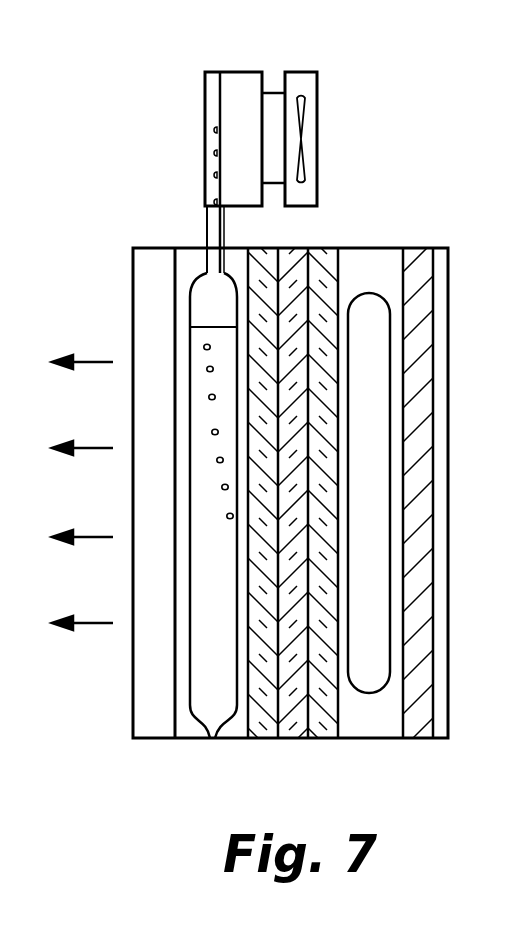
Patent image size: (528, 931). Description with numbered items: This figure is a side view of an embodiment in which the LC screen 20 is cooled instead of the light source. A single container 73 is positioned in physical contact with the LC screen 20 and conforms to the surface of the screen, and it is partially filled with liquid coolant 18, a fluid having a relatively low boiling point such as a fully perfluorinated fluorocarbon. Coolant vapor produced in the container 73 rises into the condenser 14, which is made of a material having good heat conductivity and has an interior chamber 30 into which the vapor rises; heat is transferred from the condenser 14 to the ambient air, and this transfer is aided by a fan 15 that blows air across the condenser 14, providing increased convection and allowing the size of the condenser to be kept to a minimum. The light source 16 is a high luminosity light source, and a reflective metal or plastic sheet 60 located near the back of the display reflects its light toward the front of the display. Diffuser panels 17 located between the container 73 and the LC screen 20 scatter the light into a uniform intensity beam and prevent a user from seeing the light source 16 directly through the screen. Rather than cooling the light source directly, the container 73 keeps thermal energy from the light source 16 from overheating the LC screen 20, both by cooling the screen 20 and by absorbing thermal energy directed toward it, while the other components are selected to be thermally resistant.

The condenser 14 is at (219, 72).
The fan 15 is at (312, 83).
The light source 16 is at (355, 426).
The diffuser panels 17 is at (290, 738).
The liquid coolant 18 is at (200, 697).
The LC screen 20 is at (157, 255).
The interior chamber 30 is at (212, 112).
The reflective sheet 60 is at (423, 310).
The container 73 is at (213, 738).